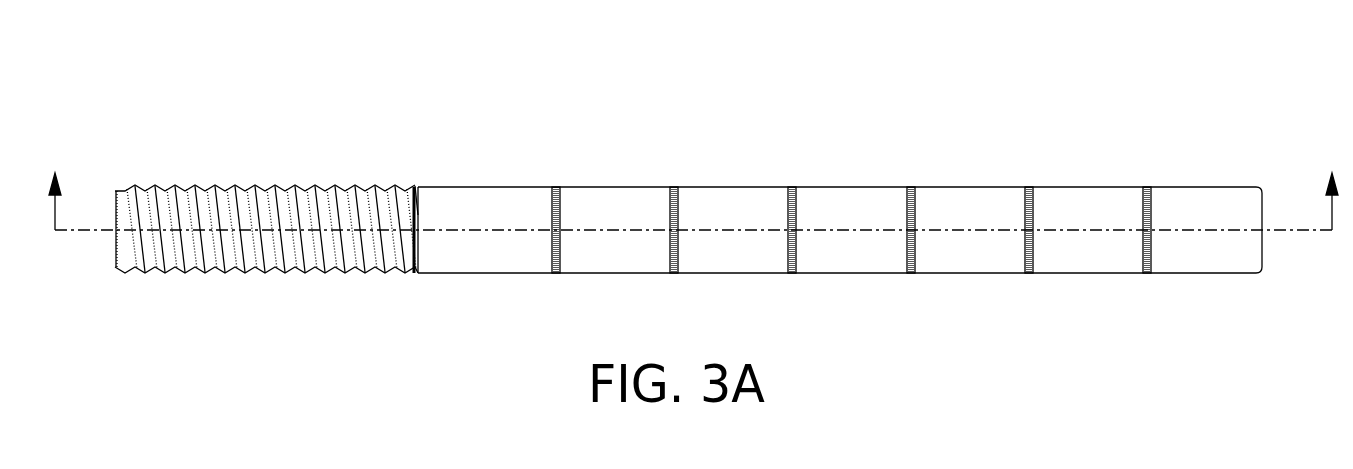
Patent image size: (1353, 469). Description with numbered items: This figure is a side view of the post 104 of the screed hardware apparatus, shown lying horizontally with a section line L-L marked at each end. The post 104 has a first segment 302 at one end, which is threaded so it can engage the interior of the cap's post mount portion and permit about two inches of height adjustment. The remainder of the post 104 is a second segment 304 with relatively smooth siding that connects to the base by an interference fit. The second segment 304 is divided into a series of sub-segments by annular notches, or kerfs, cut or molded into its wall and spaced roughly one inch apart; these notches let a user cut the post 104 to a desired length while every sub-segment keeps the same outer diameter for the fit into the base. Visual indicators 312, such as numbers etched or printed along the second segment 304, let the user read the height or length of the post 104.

The post 104 is at (701, 203).
The first segment 302 is at (108, 175).
The second segment 304 is at (861, 224).
The visual indicators 312 is at (489, 170).